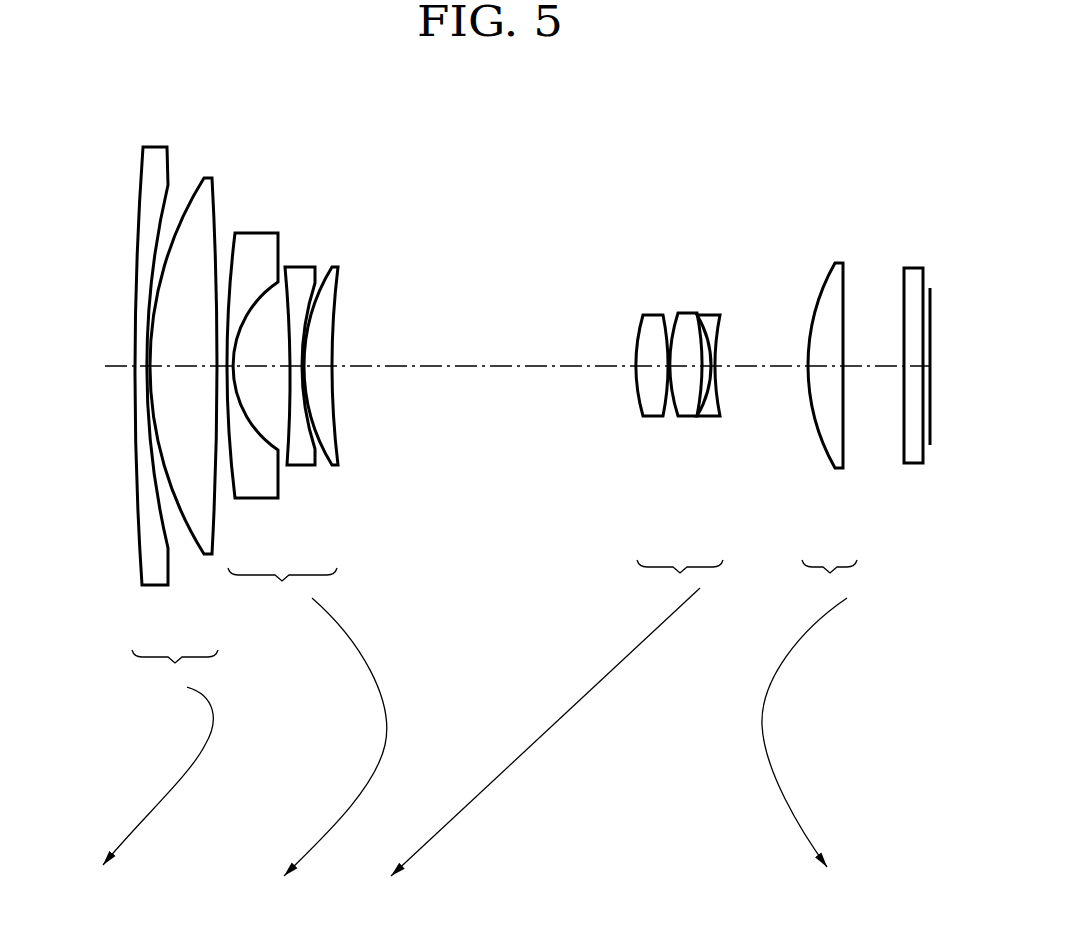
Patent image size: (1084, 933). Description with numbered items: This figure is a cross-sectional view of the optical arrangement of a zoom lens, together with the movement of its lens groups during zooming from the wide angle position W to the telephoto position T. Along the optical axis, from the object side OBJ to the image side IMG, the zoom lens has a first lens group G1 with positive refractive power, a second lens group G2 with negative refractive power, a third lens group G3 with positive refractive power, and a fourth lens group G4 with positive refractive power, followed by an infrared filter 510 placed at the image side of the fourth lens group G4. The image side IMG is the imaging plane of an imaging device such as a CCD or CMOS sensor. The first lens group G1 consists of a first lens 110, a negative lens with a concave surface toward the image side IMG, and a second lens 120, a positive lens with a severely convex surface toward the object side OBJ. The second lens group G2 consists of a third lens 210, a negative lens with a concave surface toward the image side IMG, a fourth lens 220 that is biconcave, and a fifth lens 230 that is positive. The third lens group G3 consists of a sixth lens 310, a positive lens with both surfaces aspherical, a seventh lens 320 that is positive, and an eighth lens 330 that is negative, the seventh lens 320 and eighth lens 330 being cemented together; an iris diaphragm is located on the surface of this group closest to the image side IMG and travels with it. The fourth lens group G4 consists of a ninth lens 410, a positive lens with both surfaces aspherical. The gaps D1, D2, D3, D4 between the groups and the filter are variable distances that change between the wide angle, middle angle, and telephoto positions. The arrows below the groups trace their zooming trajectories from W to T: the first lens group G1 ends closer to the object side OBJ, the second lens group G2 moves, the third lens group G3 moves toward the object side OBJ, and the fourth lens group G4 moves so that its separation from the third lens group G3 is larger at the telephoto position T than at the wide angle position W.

The first lens 110 is at (155, 152).
The second lens 120 is at (208, 178).
The third lens 210 is at (253, 240).
The fourth lens 220 is at (302, 270).
The fifth lens 230 is at (337, 270).
The sixth lens 310 is at (650, 318).
The seventh lens 320 is at (686, 316).
The eighth lens 330 is at (718, 318).
The ninth lens 410 is at (838, 262).
The infrared filter 510 is at (905, 270).
The image side IMG is at (930, 290).
The object side OBJ is at (80, 367).
The variable distance D1 is at (222, 368).
The variable distance D2 is at (460, 367).
The variable distance D3 is at (749, 367).
The variable distance D4 is at (865, 368).
The first lens group G1 is at (175, 757).
The second lens group G2 is at (307, 722).
The third lens group G3 is at (565, 718).
The fourth lens group G4 is at (829, 713).
The wide angle position W is at (60, 679).
The telephoto position T is at (60, 838).